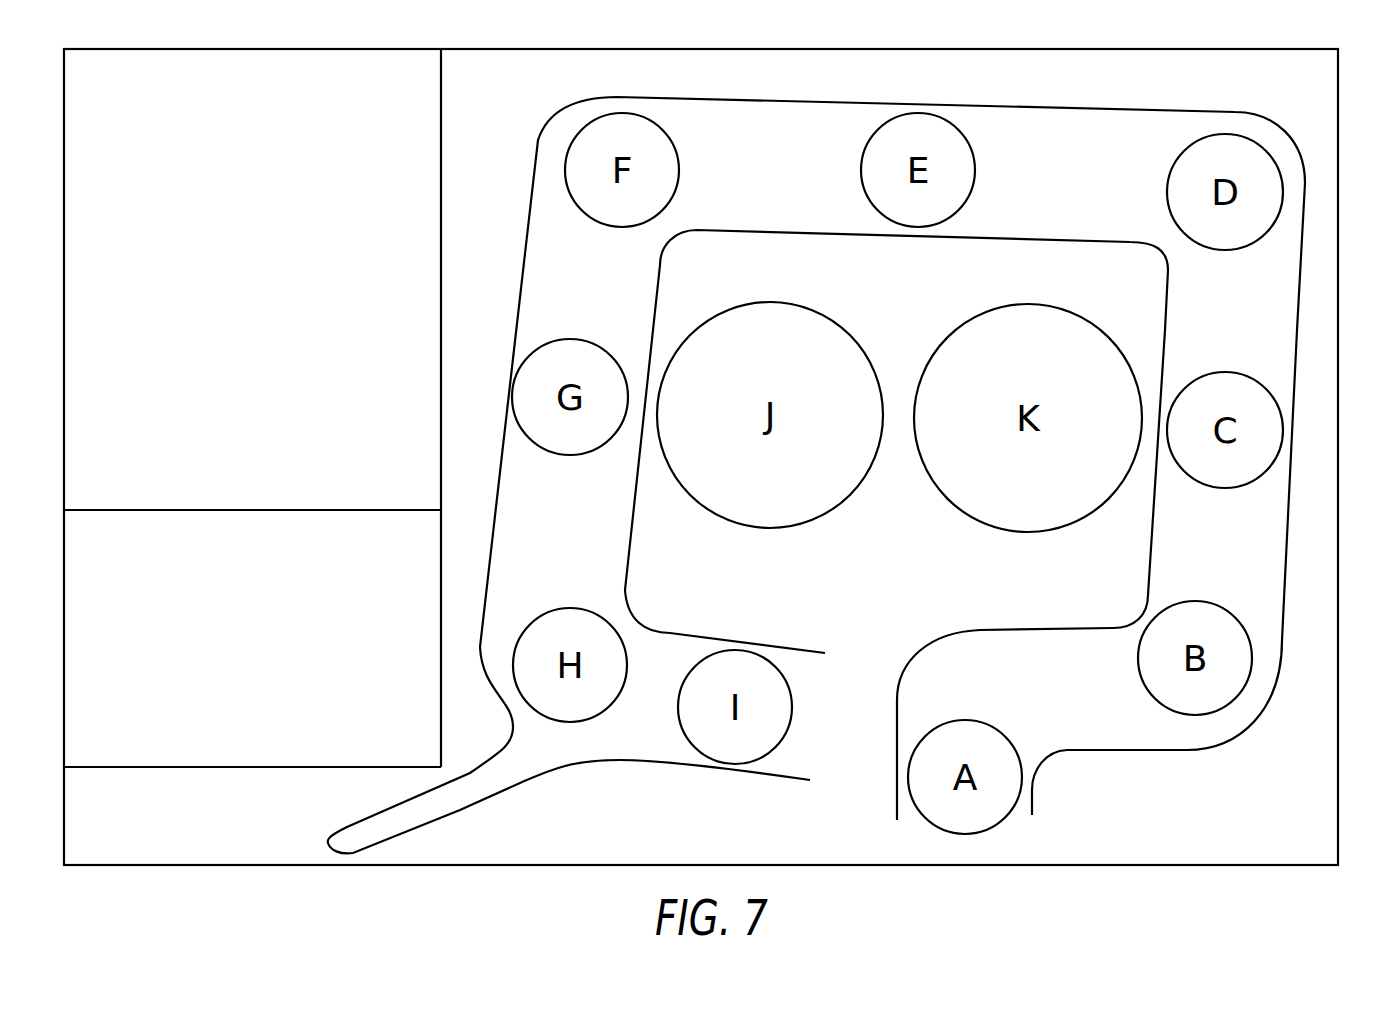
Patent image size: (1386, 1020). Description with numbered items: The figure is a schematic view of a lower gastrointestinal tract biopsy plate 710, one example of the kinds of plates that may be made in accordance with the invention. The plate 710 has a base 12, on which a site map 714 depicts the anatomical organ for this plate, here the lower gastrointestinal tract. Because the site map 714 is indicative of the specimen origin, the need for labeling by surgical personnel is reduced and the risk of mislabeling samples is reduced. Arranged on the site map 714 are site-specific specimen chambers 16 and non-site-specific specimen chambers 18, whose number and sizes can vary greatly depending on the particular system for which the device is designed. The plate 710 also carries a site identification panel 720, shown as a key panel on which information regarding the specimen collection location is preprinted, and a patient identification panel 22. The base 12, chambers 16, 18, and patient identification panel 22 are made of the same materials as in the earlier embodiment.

The base 12 is at (1325, 593).
The site-specific specimen chamber 16 is at (582, 615).
The non-site-specific specimen chamber 18 is at (778, 520).
The patient identification panel 22 is at (240, 759).
The lower gastrointestinal tract biopsy plate 710 is at (1350, 123).
The site map 714 is at (843, 223).
The site identification panel 720 is at (441, 143).